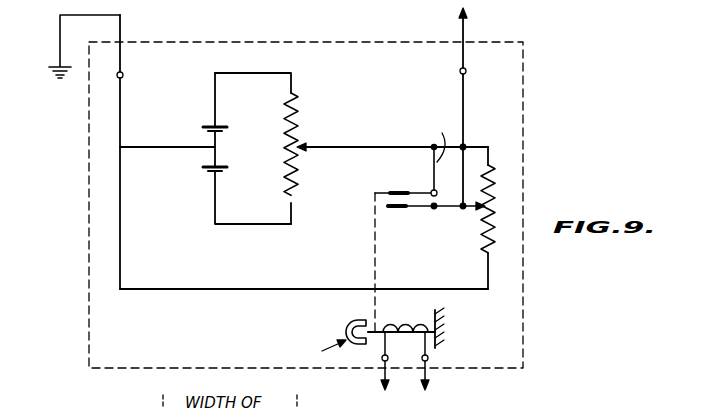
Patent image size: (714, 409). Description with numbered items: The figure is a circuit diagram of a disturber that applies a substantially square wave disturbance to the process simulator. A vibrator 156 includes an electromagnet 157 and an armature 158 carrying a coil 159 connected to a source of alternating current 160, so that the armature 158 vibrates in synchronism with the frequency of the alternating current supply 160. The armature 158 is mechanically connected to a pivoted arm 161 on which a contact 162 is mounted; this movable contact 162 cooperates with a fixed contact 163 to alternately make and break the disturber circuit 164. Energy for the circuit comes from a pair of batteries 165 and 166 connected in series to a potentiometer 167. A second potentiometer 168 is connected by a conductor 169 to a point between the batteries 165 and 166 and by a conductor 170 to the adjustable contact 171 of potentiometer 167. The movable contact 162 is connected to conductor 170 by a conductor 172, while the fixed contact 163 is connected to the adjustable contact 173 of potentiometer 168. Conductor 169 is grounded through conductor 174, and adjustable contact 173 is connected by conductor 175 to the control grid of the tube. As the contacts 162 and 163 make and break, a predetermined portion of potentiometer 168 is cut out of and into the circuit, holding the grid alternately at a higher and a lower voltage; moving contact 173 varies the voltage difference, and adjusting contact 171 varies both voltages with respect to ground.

The vibrator 156 is at (321, 351).
The electromagnet 157 is at (345, 325).
The armature 158 is at (385, 330).
The coil 159 is at (438, 314).
The source of alternating current 160 is at (410, 385).
The pivoted arm 161 is at (412, 191).
The contact 162 is at (392, 191).
The fixed contact 163 is at (402, 209).
The disturber circuit 164 is at (470, 141).
The battery 165 is at (218, 125).
The battery 166 is at (219, 173).
The potentiometer 167 is at (297, 114).
The second potentiometer 168 is at (490, 196).
The conductor 169 is at (261, 286).
The conductor 170 is at (387, 145).
The adjustable contact 171 is at (306, 150).
The conductor 172 is at (436, 153).
The adjustable contact 173 is at (475, 208).
The conductor 174 is at (123, 89).
The conductor 175 is at (460, 90).